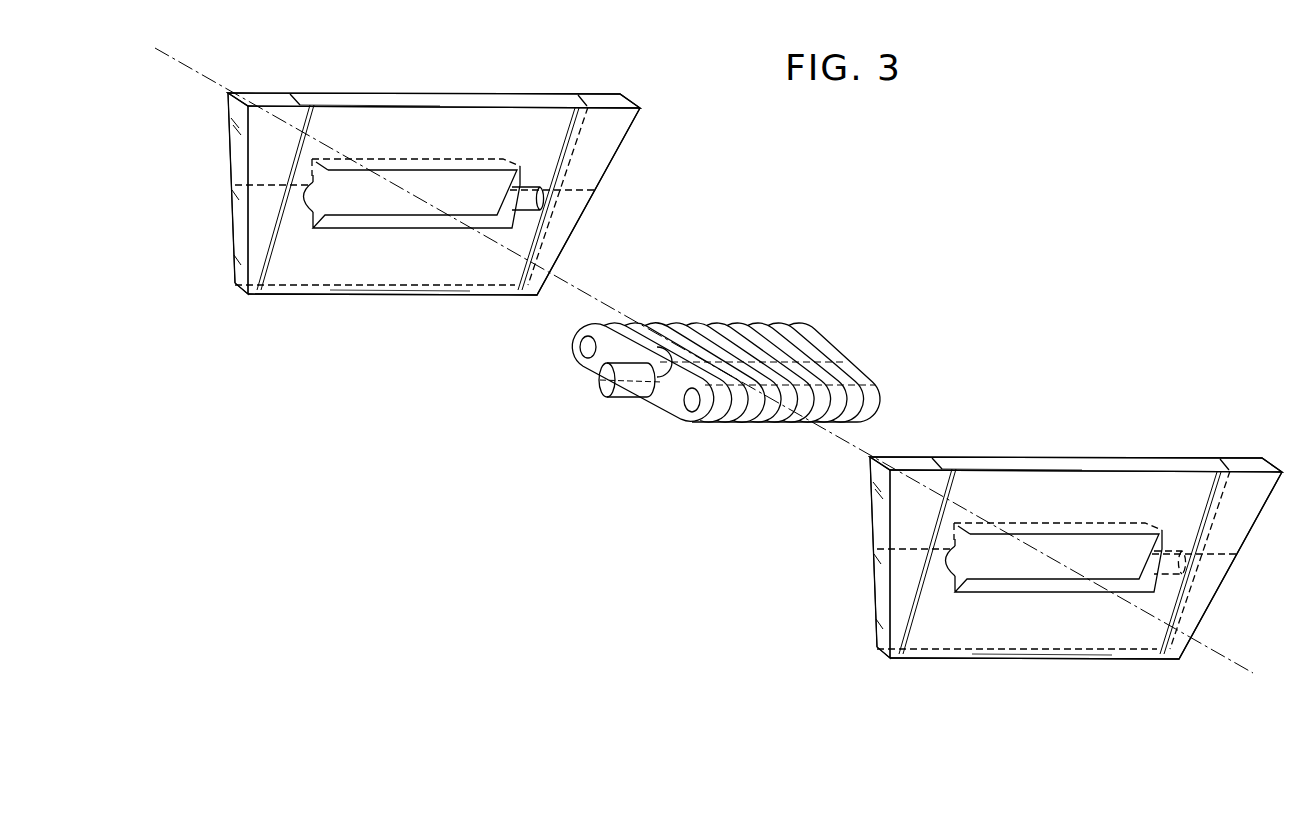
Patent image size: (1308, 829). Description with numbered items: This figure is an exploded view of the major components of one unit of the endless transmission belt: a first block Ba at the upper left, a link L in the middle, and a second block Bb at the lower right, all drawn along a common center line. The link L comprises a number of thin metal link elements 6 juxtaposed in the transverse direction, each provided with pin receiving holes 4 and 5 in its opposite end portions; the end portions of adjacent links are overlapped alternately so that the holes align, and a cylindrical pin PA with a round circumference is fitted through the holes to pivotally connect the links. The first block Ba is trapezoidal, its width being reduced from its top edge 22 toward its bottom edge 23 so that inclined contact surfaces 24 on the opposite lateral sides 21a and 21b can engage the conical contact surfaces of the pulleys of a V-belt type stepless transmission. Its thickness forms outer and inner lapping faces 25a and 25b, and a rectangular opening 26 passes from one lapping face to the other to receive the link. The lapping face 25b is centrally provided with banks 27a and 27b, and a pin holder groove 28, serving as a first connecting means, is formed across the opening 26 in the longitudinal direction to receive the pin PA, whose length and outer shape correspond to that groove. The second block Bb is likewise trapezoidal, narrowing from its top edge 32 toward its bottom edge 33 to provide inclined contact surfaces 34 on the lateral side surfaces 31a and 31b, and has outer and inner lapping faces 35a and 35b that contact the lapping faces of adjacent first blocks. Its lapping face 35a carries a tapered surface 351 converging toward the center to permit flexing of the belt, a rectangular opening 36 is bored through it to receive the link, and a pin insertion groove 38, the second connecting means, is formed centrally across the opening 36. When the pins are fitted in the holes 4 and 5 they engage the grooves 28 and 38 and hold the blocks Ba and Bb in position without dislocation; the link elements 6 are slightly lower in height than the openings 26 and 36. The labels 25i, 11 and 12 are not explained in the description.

The first block Ba is at (572, 115).
The second block Bb is at (1220, 508).
The top edge 22 is at (403, 97).
The bottom edge 23 is at (347, 293).
The inclined contact surfaces 24 is at (228, 143).
The lateral side 21a is at (235, 173).
The lateral side 21b is at (597, 158).
The outer lapping face 25a is at (347, 122).
The inner lapping face 25b is at (407, 265).
The inner guide surface 25i is at (230, 278).
The opening 26 is at (335, 210).
The bank 27a is at (260, 198).
The bank 27b is at (563, 197).
The pin holder groove 28 is at (528, 193).
The top edge 32 is at (1090, 465).
The bottom edge 33 is at (1013, 655).
The inclined contact surfaces 34 is at (877, 527).
The lateral side surface 31a is at (875, 537).
The lateral side surface 31b is at (1227, 567).
The outer lapping face 35a is at (1017, 485).
The inner lapping face 35b is at (1098, 633).
The tapered surface 351 is at (873, 625).
The opening 36 is at (977, 572).
The pin insertion groove 38 is at (878, 573).
The link unit L is at (883, 391).
The pin receiving hole 4 is at (583, 347).
The pin receiving hole 5 is at (690, 405).
The link element 6 is at (877, 400).
The connecting pin 11 is at (603, 370).
The bushing 12 is at (628, 390).
The cylindrical pin PA is at (612, 378).